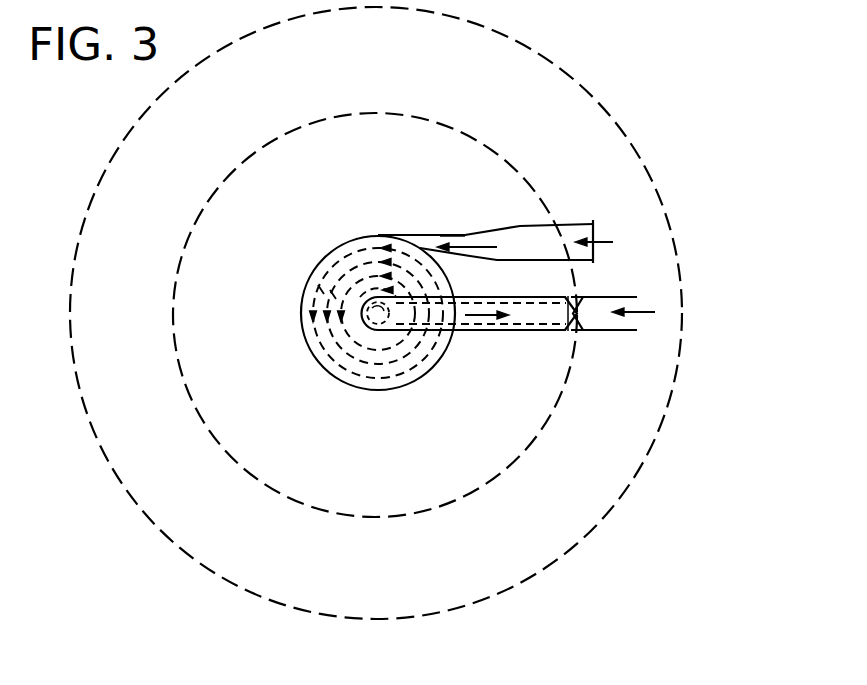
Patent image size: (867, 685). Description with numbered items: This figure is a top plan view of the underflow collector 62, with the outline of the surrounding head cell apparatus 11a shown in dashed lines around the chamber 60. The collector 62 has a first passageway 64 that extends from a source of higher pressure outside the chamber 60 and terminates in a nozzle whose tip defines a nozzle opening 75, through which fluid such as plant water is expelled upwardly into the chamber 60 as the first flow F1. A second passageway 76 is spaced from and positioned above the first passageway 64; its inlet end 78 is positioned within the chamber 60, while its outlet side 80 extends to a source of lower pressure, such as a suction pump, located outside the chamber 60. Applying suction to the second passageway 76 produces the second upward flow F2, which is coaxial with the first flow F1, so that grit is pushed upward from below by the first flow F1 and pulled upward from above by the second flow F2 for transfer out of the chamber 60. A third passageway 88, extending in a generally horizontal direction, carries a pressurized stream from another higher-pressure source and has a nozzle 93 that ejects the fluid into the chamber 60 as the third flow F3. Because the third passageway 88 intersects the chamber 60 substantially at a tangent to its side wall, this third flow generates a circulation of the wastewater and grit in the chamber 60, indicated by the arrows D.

The housing wall 11a is at (669, 209).
The chamber 60 is at (300, 340).
The underflow collector 62 is at (322, 227).
The first passageway 64 is at (593, 335).
The nozzle opening 75 is at (308, 290).
The second passageway 76 is at (517, 332).
The inlet end 78 is at (362, 322).
The outlet side 80 is at (590, 298).
The third passageway 88 is at (503, 230).
The nozzle 93 is at (467, 234).
The arrows D is at (341, 343).
The first flow F1 is at (640, 314).
The second flow F2 is at (487, 320).
The outlet flow F3 is at (472, 247).